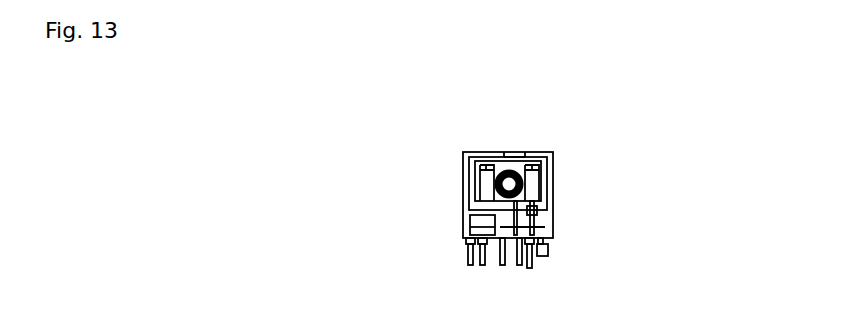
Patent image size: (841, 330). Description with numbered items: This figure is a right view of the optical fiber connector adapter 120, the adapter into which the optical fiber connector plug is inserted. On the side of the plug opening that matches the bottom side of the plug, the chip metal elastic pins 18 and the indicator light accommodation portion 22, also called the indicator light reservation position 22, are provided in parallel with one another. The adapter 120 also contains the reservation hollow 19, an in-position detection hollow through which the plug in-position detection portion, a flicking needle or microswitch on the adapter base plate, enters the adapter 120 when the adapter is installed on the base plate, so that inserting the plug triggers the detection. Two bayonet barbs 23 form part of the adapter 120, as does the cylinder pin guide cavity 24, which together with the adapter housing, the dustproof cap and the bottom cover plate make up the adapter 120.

The optical fiber connector adapter 120 is at (558, 186).
The bayonet barbs 23 is at (495, 168).
The indicator light accommodation portion 22 is at (470, 227).
The cylinder pin guide cavity 24 is at (533, 208).
The reservation hollow 19 is at (483, 250).
The metal elastic pins 18 is at (522, 245).